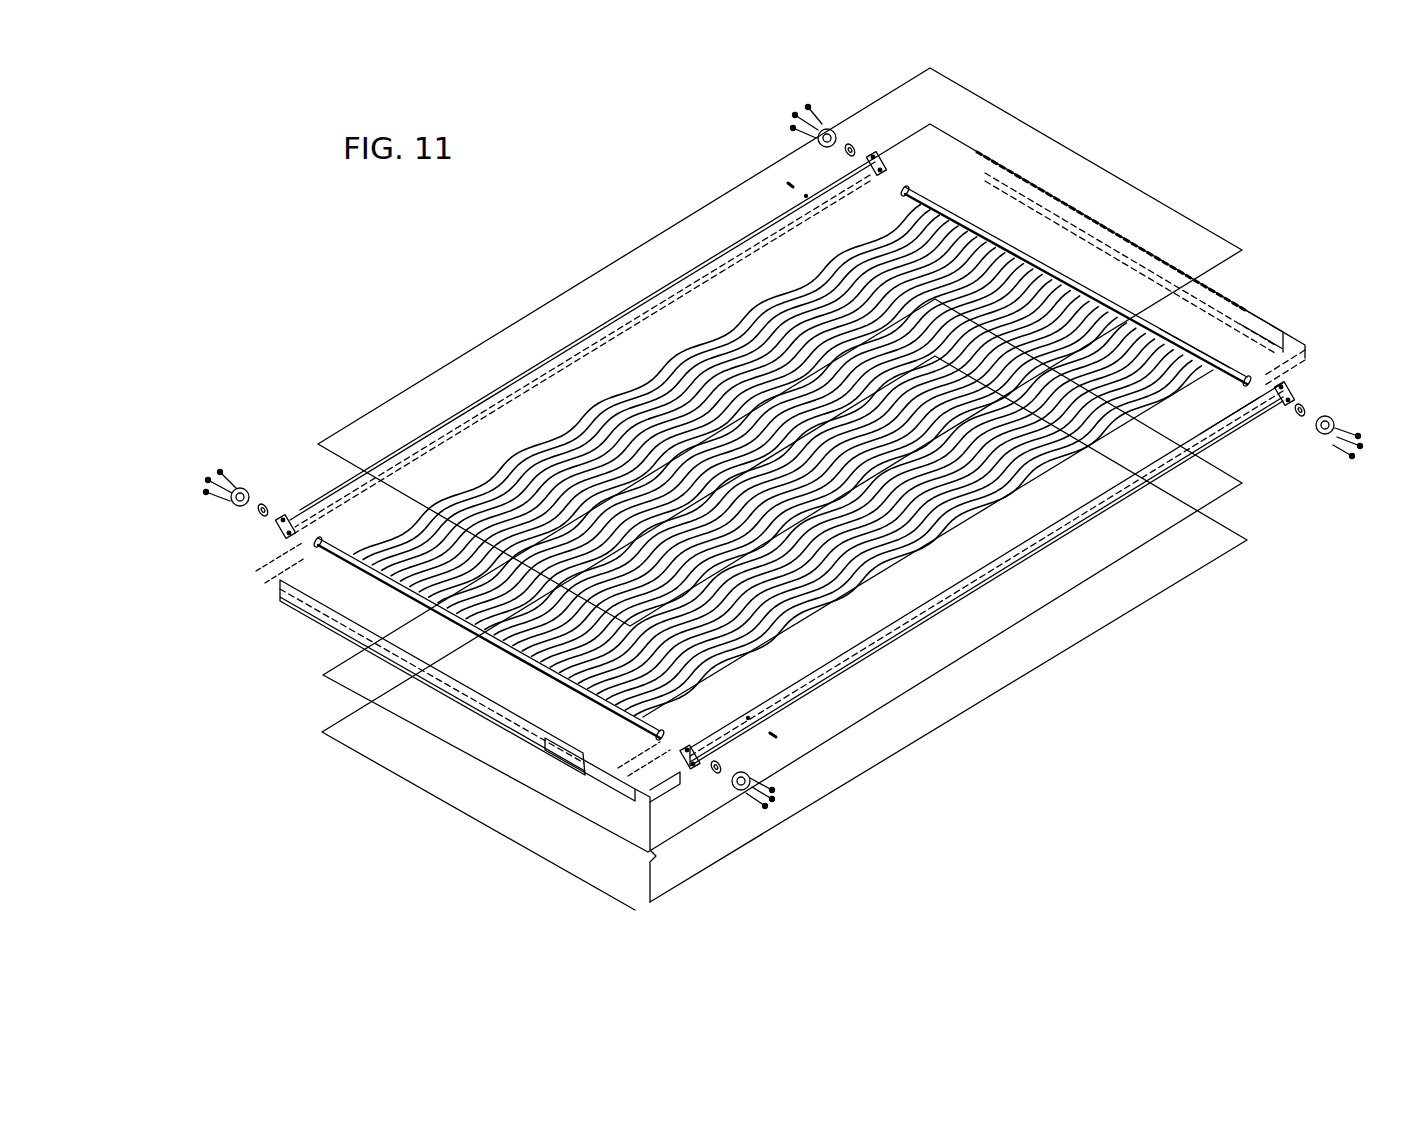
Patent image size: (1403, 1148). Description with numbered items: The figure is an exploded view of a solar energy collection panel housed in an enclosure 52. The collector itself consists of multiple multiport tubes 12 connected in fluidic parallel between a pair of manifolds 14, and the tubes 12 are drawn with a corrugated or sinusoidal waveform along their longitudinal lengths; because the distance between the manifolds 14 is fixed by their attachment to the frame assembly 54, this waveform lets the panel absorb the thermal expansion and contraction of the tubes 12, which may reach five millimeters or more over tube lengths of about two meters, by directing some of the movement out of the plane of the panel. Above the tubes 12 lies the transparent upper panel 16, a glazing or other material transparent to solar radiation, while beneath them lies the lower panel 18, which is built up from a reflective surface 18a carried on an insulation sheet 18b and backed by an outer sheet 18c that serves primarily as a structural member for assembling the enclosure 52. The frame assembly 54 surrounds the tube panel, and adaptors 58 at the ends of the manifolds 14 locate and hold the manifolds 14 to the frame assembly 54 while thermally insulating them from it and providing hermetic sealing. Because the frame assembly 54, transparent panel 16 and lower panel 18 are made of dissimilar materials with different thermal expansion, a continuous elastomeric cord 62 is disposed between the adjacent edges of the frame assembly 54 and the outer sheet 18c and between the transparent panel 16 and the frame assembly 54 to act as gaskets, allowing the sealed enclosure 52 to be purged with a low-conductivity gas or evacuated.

The tubes 12 is at (890, 558).
The manifolds 14 is at (947, 205).
The transparent upper panel 16 is at (1088, 176).
The lower panel 18 is at (782, 600).
The reflective surface 18a is at (658, 777).
The insulation sheet 18b is at (622, 787).
The outer sheet 18c is at (613, 899).
The enclosure 52 is at (327, 384).
The frame assembly 54 is at (1263, 325).
The adaptors 58 is at (851, 138).
The elastomeric cord 62 is at (1200, 332).